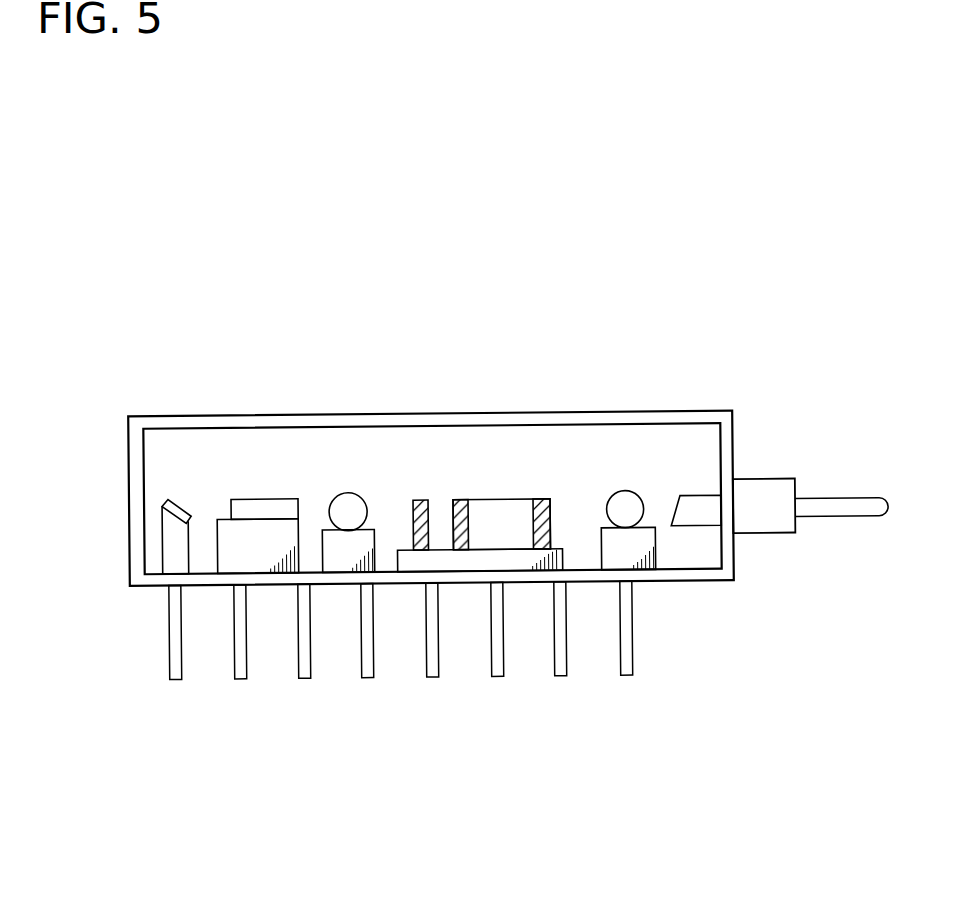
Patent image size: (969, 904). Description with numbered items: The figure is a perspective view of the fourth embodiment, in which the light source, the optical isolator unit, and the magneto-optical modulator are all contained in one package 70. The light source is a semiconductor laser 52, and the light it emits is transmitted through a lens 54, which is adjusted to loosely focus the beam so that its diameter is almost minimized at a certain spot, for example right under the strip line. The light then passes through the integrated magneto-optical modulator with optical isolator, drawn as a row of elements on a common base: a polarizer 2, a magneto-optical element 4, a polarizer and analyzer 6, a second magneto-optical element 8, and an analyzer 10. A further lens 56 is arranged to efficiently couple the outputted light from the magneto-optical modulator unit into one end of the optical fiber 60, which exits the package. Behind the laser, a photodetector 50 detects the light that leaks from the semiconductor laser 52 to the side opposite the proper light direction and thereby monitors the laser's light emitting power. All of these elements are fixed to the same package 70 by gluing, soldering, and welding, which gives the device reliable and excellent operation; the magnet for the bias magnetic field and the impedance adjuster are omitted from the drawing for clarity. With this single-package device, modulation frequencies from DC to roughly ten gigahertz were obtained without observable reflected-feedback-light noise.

The polarizer 2 is at (423, 500).
The magneto-optical element 4 is at (442, 537).
The polarizer and analyzer 6 is at (462, 500).
The magneto-optical element 8 is at (488, 538).
The analyzer 10 is at (542, 500).
The photodetector 50 is at (178, 497).
The semiconductor laser 52 is at (263, 498).
The lens 54 is at (347, 497).
The lens 56 is at (630, 515).
The optical fiber 60 is at (698, 505).
The package 70 is at (664, 412).